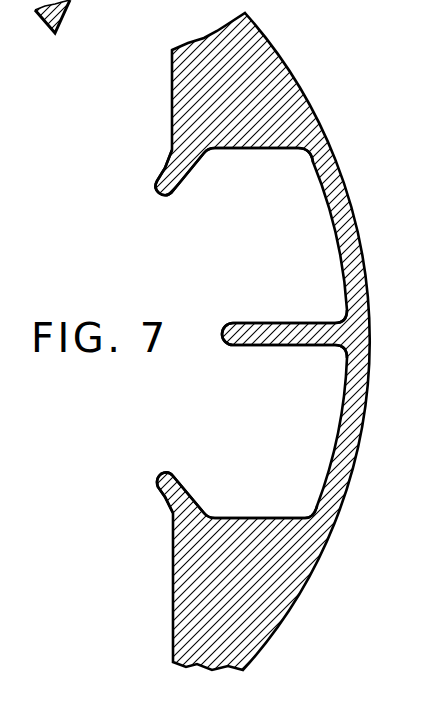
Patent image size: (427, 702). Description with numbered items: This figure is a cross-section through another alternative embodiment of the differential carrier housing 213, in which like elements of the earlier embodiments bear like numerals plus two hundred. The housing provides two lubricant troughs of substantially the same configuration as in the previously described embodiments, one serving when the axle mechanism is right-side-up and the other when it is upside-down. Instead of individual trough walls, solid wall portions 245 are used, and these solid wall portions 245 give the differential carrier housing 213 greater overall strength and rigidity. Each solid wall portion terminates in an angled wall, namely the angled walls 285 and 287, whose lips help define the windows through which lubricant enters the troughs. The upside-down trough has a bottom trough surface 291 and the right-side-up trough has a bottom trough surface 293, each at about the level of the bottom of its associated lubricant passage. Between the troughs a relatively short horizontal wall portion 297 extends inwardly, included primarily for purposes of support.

The differential carrier housing 213 is at (326, 117).
The solid wall portions 245 is at (200, 70).
The angled wall 285 is at (160, 176).
The angled wall 287 is at (163, 494).
The trough surface 291 is at (250, 150).
The trough surface 293 is at (248, 518).
The horizontal wall portion 297 is at (296, 303).